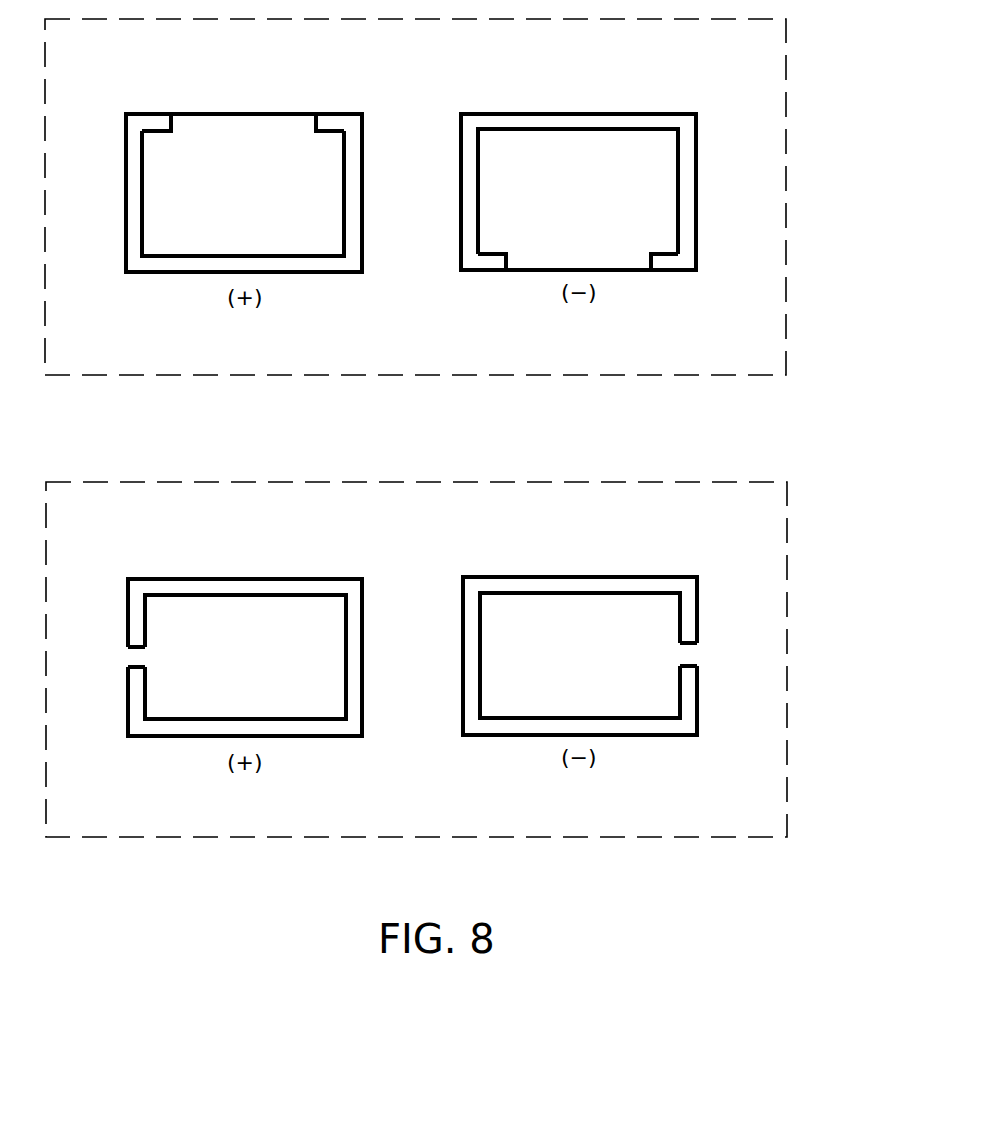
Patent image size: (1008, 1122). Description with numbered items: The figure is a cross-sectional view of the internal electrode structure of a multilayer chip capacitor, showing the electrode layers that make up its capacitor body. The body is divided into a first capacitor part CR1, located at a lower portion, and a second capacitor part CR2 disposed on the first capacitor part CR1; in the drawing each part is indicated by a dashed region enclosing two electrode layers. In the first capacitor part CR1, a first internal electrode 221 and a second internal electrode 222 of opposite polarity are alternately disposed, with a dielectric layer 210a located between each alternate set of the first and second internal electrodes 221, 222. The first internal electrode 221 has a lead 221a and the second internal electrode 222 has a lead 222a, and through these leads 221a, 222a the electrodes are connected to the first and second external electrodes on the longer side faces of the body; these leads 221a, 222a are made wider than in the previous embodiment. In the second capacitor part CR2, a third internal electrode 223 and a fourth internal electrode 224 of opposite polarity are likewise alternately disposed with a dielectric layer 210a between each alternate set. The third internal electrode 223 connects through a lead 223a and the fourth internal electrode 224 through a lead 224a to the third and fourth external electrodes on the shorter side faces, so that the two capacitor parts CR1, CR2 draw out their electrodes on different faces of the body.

The dielectric layer 210a is at (337, 120).
The first internal electrode 221 is at (155, 145).
The lead 221a is at (278, 122).
The second internal electrode 222 is at (547, 142).
The lead 222a is at (608, 258).
The third internal electrode 223 is at (180, 607).
The lead 223a is at (140, 660).
The fourth internal electrode 224 is at (625, 605).
The lead 224a is at (688, 654).
The first capacitor part CR1 is at (785, 178).
The second capacitor part CR2 is at (787, 720).